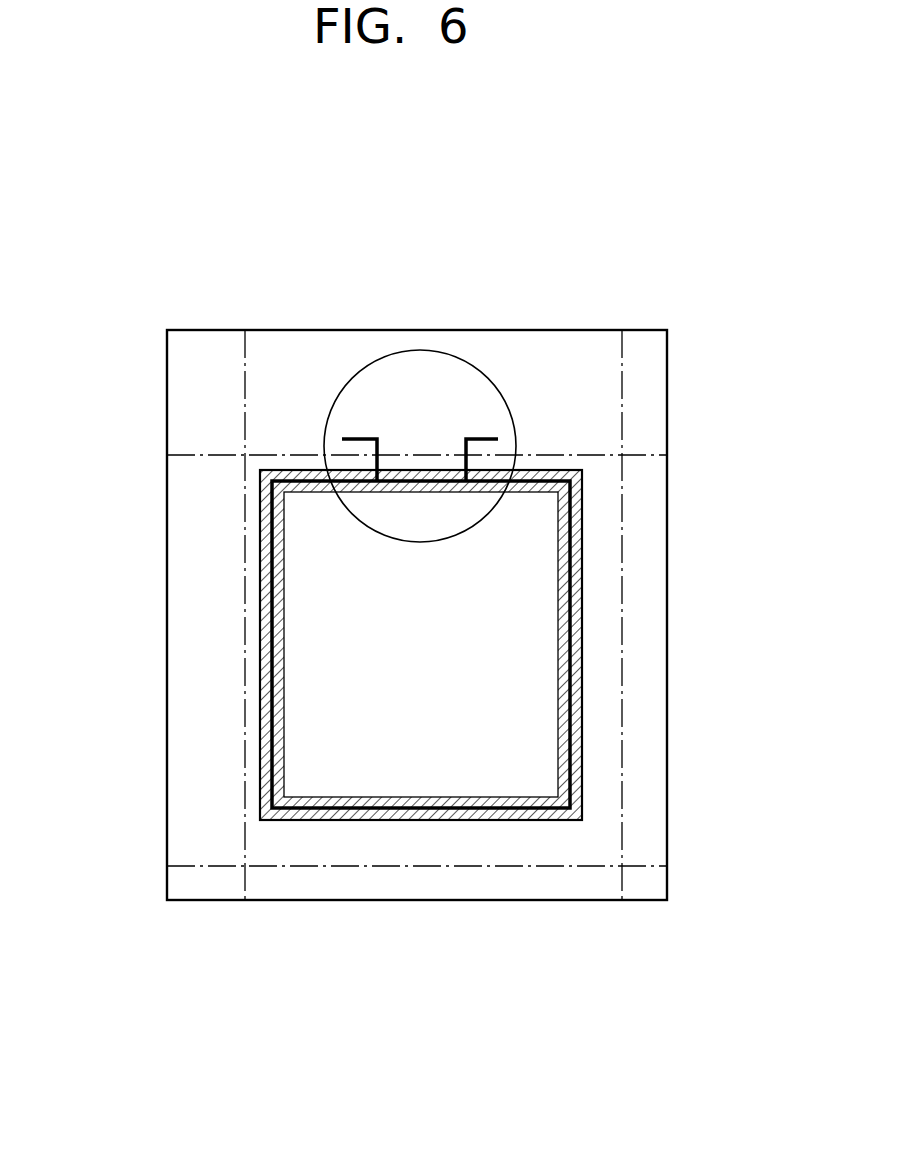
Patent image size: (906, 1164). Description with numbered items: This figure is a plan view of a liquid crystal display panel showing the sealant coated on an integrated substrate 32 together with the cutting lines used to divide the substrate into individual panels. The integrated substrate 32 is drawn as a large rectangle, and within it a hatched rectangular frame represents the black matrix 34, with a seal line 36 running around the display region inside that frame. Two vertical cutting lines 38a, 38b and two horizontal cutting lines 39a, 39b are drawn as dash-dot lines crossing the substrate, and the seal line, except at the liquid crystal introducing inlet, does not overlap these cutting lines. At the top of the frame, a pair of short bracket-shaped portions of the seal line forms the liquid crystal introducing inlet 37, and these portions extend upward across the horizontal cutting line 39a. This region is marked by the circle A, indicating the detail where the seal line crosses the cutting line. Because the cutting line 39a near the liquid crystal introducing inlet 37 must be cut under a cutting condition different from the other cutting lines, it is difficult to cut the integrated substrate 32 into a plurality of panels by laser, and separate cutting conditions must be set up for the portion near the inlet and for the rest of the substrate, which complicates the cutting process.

The integrated substrate 32 is at (193, 773).
The black matrix 34 is at (260, 470).
The seal line 36 is at (270, 646).
The liquid crystal introducing inlet 37 is at (405, 432).
The cutting line 38a is at (622, 613).
The cutting line 38b is at (245, 363).
The cutting line 39a is at (595, 453).
The cutting line 39b is at (403, 865).
The enlarged portion A is at (490, 378).